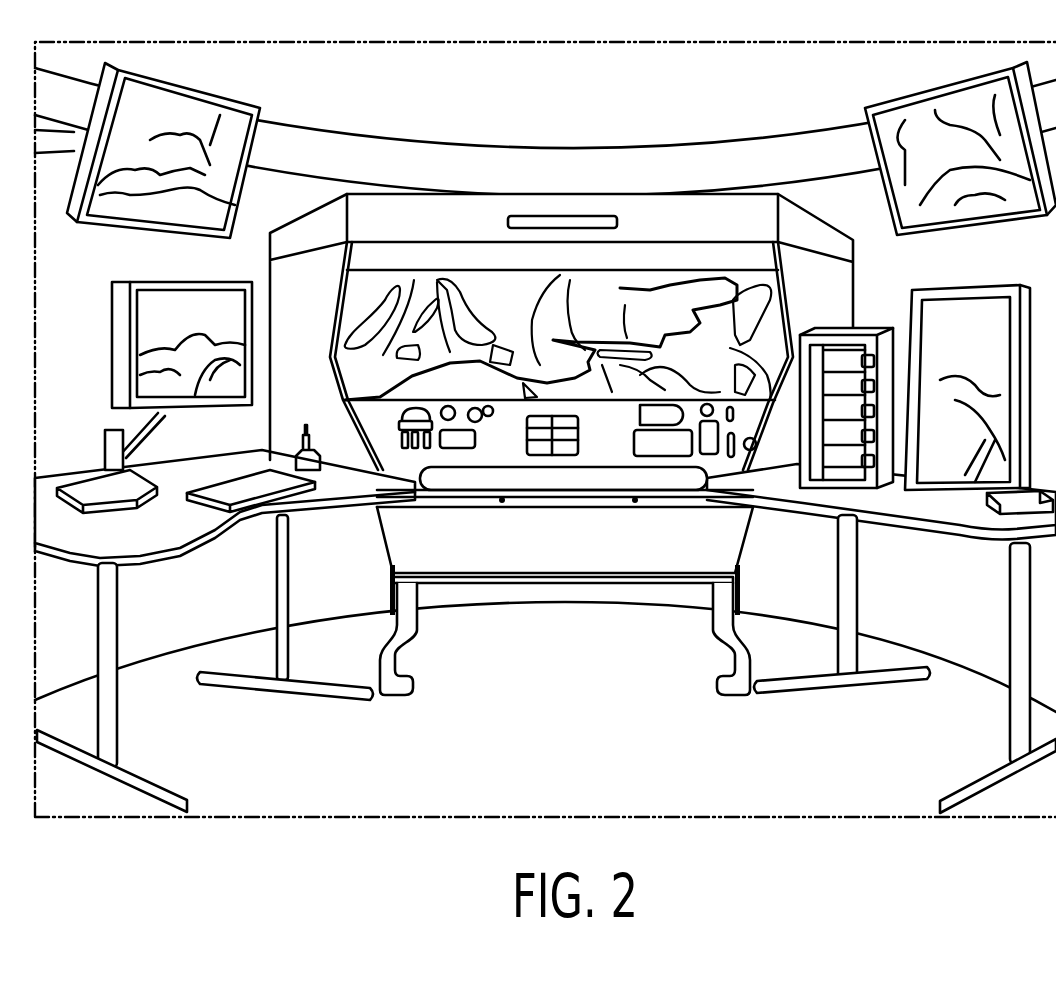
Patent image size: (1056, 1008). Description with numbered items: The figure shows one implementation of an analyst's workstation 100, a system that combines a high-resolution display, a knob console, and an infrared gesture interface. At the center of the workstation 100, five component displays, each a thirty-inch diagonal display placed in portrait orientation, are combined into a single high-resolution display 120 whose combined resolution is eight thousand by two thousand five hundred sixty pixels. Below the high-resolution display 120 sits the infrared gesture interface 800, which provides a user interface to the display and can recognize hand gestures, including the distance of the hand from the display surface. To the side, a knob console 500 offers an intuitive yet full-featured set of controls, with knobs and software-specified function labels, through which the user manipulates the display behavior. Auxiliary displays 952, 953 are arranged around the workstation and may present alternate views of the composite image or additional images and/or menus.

The analyst's workstation 100 is at (462, 222).
The high-resolution display 120 is at (590, 305).
The knob console 500 is at (848, 362).
The infrared gesture interface 800 is at (663, 450).
The auxiliary display 952 is at (157, 325).
The auxiliary display 953 is at (113, 190).